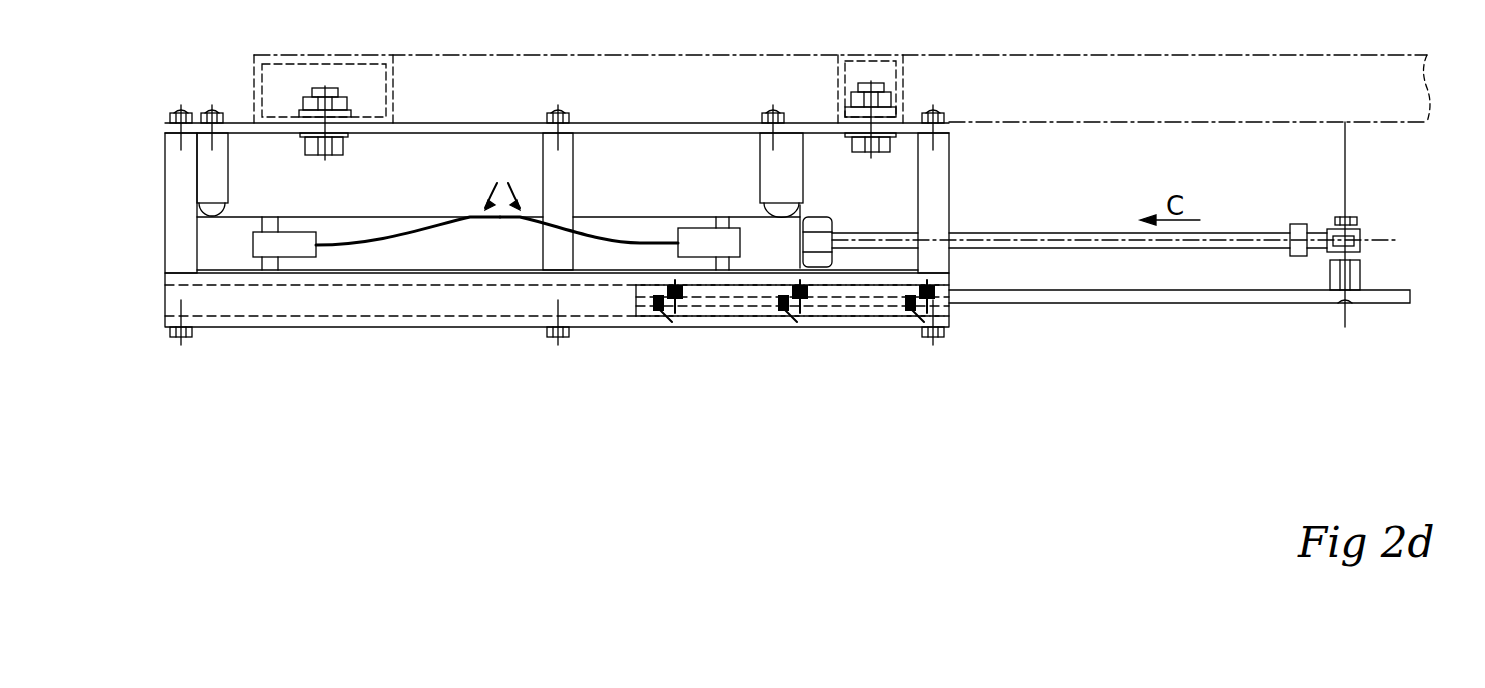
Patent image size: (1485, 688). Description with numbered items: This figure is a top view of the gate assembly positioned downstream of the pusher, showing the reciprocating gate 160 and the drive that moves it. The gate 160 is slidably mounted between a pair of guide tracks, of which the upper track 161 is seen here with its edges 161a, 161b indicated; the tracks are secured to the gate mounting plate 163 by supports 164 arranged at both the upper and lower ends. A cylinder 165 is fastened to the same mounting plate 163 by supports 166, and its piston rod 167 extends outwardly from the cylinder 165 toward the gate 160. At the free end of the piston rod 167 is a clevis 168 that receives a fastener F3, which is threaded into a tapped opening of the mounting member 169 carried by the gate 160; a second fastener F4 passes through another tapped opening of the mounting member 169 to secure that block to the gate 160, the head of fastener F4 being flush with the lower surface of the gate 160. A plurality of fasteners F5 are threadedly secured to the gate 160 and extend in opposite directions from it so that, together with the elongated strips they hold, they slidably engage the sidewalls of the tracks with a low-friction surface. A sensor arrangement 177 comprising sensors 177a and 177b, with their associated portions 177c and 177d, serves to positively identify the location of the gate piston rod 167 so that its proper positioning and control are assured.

The reciprocating gate 160 is at (1181, 297).
The upper track 161 is at (858, 321).
The upper bar edge 161a is at (937, 288).
The lower bar edge 161b is at (938, 312).
The gate mounting plate 163 is at (689, 124).
The support 164 is at (177, 177).
The cylinder 165 is at (362, 221).
The support 166 is at (763, 176).
The piston rod 167 is at (1035, 237).
The clevis 168 is at (1327, 230).
The mounting member 169 is at (1362, 278).
The hanger 177 is at (237, 222).
The sensor 177a is at (293, 231).
The sensor 177b is at (704, 236).
The first cable portion 177c is at (432, 226).
The second cable portion 177d is at (620, 203).
The fastener F3 is at (1350, 207).
The fastener F4 is at (1343, 303).
The fastener F5 is at (675, 306).